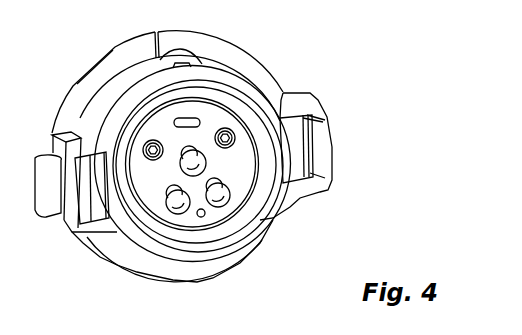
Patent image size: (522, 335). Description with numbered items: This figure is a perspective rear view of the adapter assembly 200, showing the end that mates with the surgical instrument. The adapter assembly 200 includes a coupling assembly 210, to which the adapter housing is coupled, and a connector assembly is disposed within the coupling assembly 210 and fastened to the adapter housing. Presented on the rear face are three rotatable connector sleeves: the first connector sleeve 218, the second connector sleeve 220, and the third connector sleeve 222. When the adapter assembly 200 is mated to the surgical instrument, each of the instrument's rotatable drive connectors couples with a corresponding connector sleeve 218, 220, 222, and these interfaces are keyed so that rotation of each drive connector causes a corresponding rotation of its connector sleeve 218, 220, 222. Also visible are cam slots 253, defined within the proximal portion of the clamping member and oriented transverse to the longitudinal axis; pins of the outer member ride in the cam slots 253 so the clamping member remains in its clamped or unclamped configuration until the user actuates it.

The adapter assembly 200 is at (208, 34).
The coupling assembly 210 is at (286, 93).
The first connector sleeve 218 is at (225, 207).
The second connector sleeve 220 is at (186, 211).
The third connector sleeve 222 is at (195, 174).
The cam slots 253 is at (183, 163).